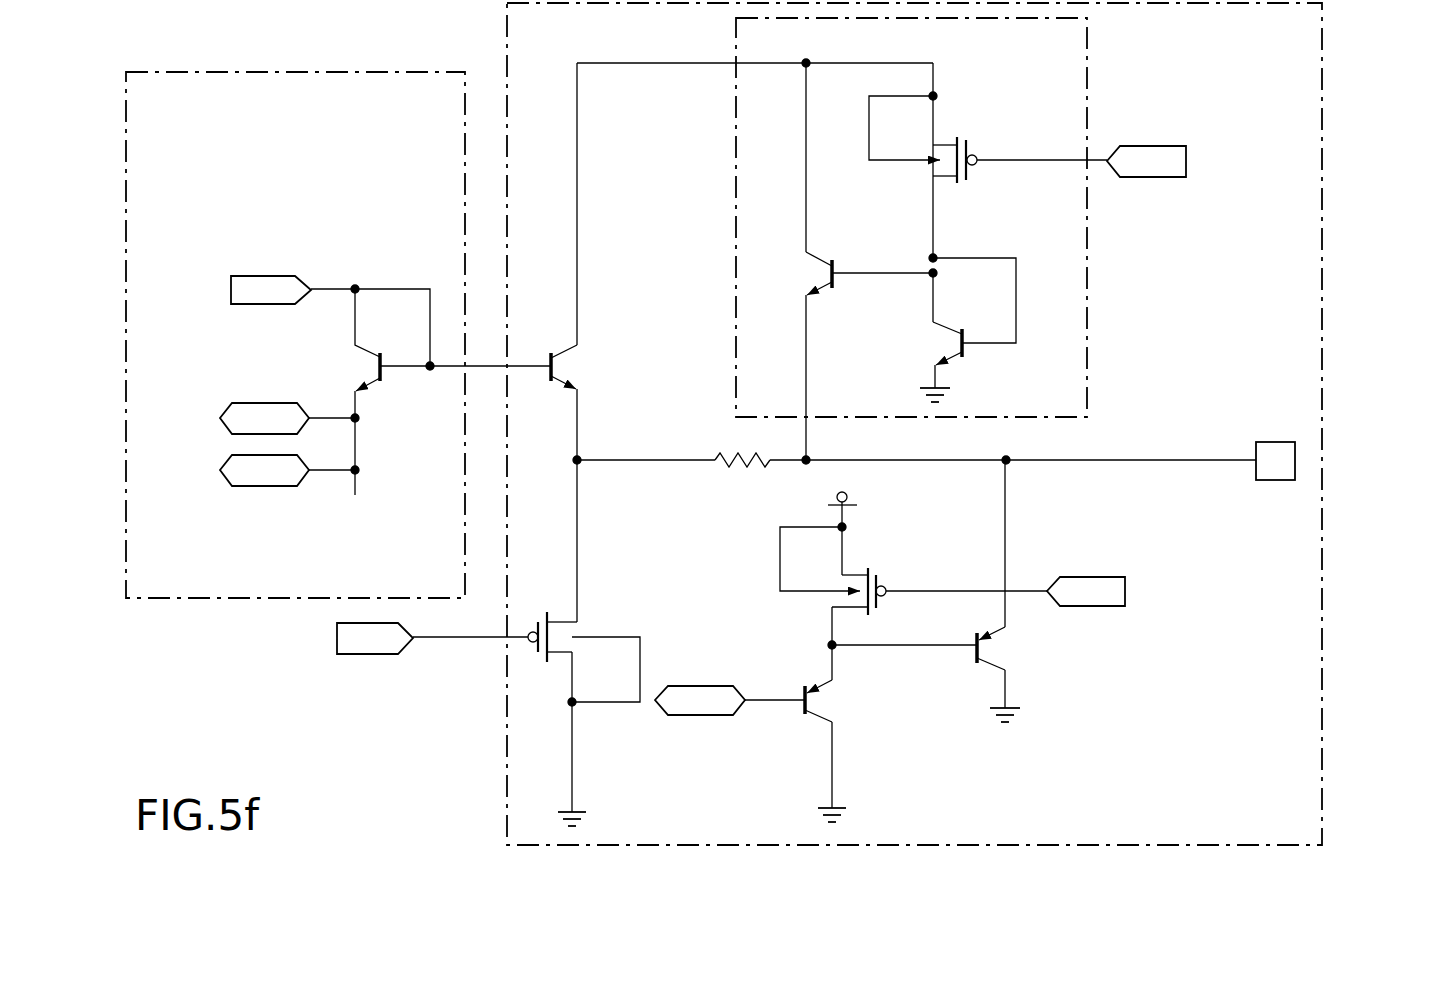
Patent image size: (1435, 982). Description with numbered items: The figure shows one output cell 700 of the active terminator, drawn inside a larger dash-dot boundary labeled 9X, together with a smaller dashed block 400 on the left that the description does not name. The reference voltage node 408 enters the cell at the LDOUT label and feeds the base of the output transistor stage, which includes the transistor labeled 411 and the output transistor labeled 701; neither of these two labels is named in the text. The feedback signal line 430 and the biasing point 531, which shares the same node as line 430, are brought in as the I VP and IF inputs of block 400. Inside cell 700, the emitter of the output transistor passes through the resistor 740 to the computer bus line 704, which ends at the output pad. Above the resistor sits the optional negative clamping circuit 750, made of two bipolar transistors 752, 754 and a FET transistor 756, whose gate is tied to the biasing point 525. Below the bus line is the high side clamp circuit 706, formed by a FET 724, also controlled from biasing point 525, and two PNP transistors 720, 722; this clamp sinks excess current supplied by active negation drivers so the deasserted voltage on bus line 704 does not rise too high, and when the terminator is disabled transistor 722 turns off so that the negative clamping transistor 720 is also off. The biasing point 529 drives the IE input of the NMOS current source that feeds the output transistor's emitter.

The integrated circuit chip 9X is at (1325, 762).
The output cell 700 is at (527, 345).
The laser driver output stage 400 is at (160, 601).
The reference voltage node 408 is at (325, 286).
The transistor Q200 411 is at (358, 365).
The feedback signal line 430 is at (220, 428).
The biasing point 531 is at (245, 486).
The transistor Q201 701 is at (652, 372).
The negative clamping circuit 750 is at (1091, 87).
The FET transistor 756 is at (943, 104).
The biasing point 525 is at (1168, 144).
The bipolar transistor 752 is at (808, 272).
The bipolar transistor 754 is at (1016, 310).
The resistor 740 is at (715, 492).
The computer bus line 704 is at (1158, 460).
The FET 724 is at (815, 622).
The negative clamping transistor 720 is at (1085, 658).
The transistor 722 is at (872, 752).
The high side clamp circuit 706 is at (938, 734).
The biasing point 529 is at (390, 652).